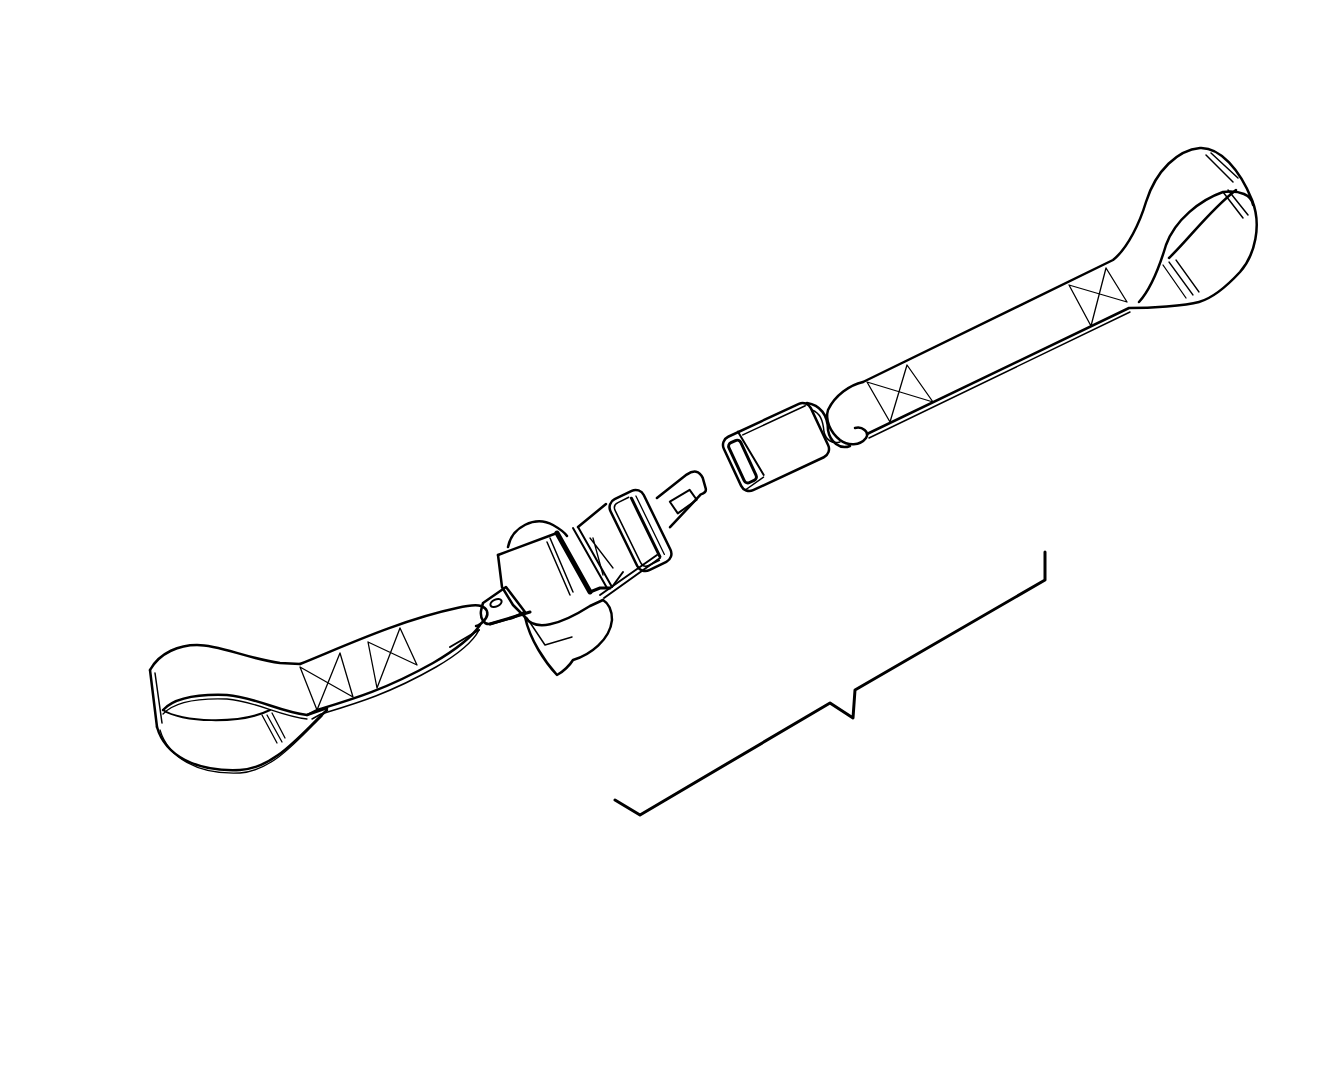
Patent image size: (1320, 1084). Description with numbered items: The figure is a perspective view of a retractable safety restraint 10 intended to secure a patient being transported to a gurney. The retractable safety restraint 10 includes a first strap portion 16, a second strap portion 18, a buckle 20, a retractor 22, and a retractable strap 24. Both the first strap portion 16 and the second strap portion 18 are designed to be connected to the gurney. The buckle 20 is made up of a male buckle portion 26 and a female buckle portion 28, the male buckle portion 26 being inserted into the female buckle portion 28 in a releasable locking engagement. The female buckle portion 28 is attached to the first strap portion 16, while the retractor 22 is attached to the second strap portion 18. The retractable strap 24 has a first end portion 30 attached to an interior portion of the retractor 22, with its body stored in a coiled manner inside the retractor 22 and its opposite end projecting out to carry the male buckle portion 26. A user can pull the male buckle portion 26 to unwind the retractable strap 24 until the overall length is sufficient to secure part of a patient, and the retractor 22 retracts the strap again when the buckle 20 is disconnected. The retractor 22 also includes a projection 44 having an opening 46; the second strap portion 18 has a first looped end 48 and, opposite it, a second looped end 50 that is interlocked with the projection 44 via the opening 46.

The retractable safety restraint 10 is at (560, 252).
The first strap portion 16 is at (967, 303).
The second strap portion 18 is at (343, 608).
The buckle 20 is at (697, 448).
The retractor 22 is at (533, 550).
The retractable strap 24 is at (605, 523).
The male buckle portion 26 is at (687, 550).
The female buckle portion 28 is at (795, 448).
The first end portion 30 is at (628, 550).
The projection 44 is at (509, 602).
The opening 46 is at (480, 600).
The first looped end 48 is at (228, 750).
The second looped end 50 is at (466, 648).